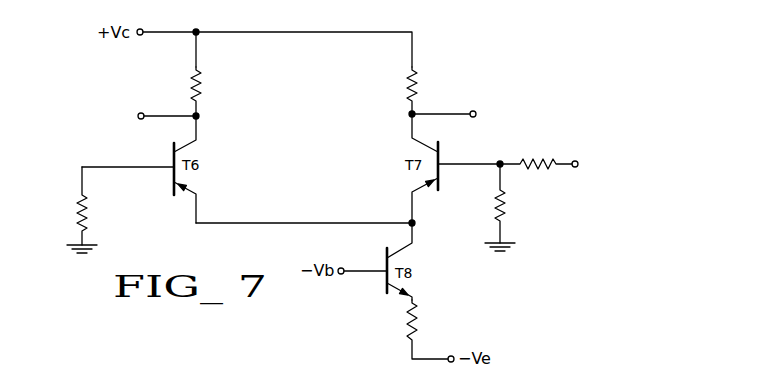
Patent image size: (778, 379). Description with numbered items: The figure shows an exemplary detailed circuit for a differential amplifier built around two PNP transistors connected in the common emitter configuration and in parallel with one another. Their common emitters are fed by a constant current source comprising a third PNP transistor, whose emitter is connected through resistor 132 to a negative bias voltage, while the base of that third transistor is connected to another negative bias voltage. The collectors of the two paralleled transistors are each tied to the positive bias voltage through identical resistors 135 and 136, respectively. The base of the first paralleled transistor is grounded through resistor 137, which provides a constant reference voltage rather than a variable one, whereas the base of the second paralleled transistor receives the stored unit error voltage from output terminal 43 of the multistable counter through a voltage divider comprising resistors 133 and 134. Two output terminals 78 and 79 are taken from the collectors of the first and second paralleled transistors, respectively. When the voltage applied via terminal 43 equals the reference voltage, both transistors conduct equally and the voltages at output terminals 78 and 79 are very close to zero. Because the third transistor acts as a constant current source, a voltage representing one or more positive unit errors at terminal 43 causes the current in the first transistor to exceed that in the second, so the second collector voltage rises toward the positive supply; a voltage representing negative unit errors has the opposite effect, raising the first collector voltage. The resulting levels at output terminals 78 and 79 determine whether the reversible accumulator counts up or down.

The resistor 135 is at (206, 89).
The resistor 136 is at (420, 88).
The output terminal 78 is at (138, 115).
The output terminal 79 is at (477, 114).
The resistor 137 is at (78, 203).
The resistor 134 is at (528, 160).
The resistor 133 is at (506, 201).
The output terminal 43 is at (579, 164).
The resistor 132 is at (432, 318).